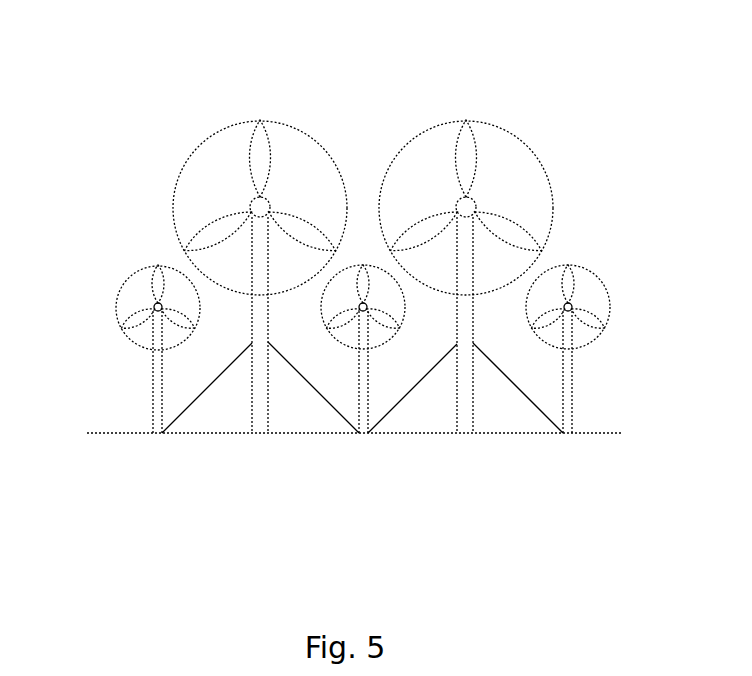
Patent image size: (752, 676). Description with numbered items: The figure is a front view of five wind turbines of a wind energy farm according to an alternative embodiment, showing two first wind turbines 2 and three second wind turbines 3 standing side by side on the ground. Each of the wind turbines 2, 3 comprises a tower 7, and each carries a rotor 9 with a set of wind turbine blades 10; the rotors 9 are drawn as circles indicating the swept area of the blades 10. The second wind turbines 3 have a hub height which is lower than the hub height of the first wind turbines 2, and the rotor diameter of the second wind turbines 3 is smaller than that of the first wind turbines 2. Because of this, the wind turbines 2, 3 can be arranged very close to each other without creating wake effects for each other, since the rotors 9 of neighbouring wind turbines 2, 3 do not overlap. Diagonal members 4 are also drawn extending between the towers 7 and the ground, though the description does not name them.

The first wind turbine 2 is at (238, 89).
The second wind turbine 3 is at (93, 283).
The diagonal brace 4 is at (213, 383).
The tower 7 is at (157, 378).
The rotor 9 is at (262, 206).
The wind turbine blades 10 is at (260, 152).